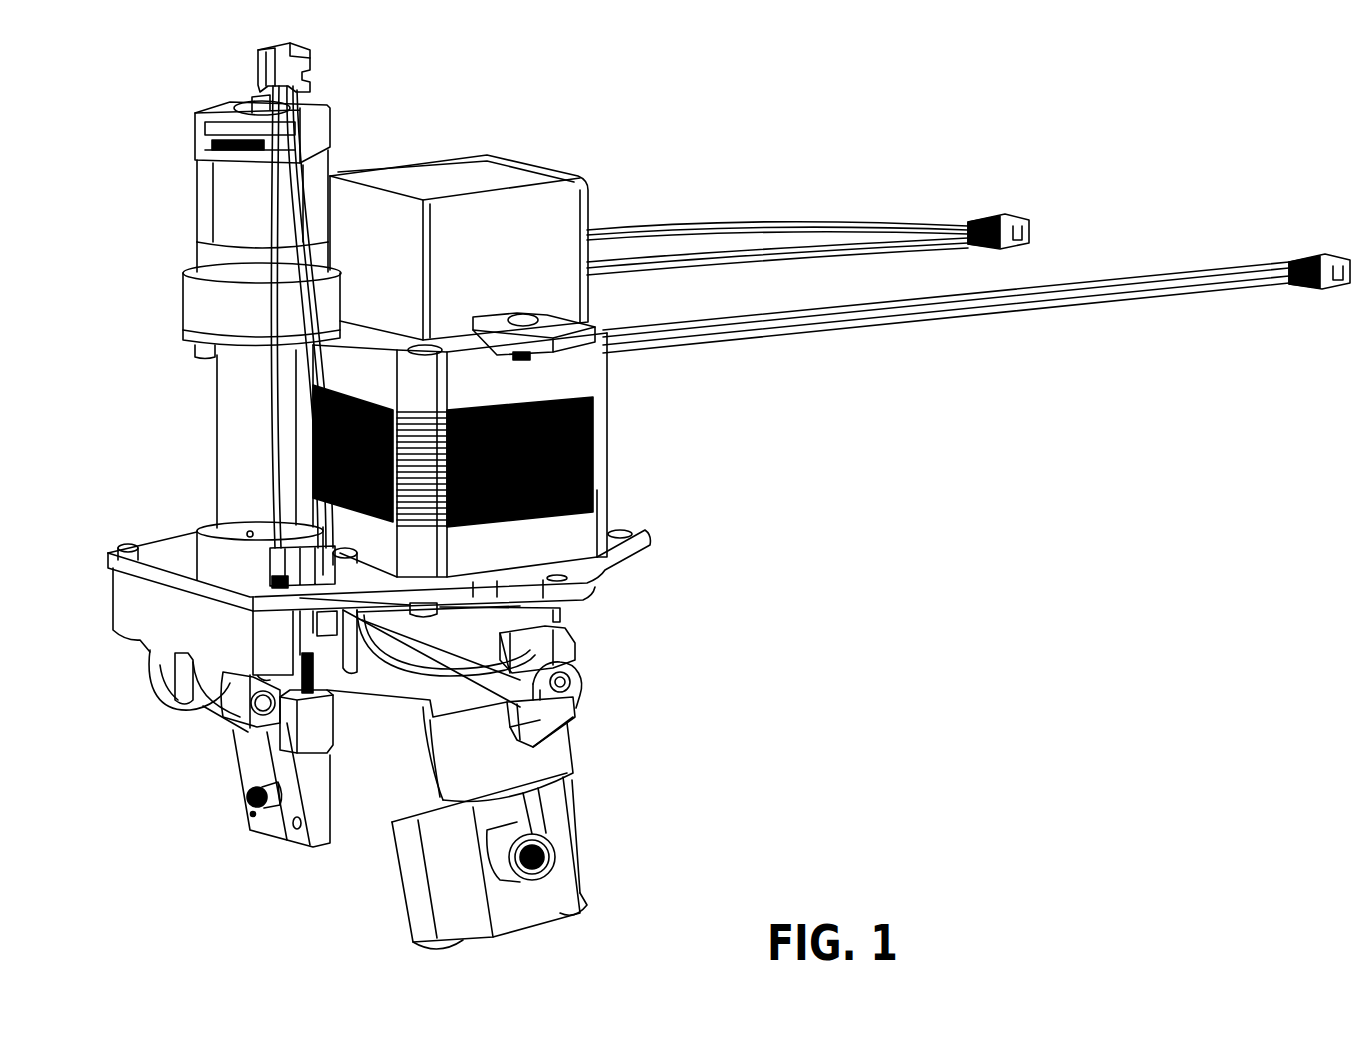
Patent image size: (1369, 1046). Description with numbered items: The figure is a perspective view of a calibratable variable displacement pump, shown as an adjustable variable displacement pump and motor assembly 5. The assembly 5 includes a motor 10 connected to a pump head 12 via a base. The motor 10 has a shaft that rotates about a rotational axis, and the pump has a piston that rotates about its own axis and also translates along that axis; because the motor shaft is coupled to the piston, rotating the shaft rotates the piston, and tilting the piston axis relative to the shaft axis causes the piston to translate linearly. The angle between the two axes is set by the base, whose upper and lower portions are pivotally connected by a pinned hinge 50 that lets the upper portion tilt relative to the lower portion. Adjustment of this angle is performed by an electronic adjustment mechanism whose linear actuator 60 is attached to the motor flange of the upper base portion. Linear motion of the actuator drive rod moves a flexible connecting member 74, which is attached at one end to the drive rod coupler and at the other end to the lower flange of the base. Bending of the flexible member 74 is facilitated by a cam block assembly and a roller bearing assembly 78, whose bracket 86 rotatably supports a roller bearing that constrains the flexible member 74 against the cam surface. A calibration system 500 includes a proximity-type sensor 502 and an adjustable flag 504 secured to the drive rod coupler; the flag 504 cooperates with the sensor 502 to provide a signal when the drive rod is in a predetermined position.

The adjustable variable displacement pump and motor assembly 5 is at (690, 128).
The motor 10 is at (570, 210).
The pump head 12 is at (578, 815).
The hinge 50 is at (578, 686).
The linear actuator 60 is at (198, 296).
The flexible connecting member 74 is at (263, 730).
The roller bearing assembly 78 is at (137, 607).
The bracket 86 is at (165, 660).
The calibration system 500 is at (555, 733).
The sensor 502 is at (574, 658).
The adjustable flag 504 is at (313, 737).